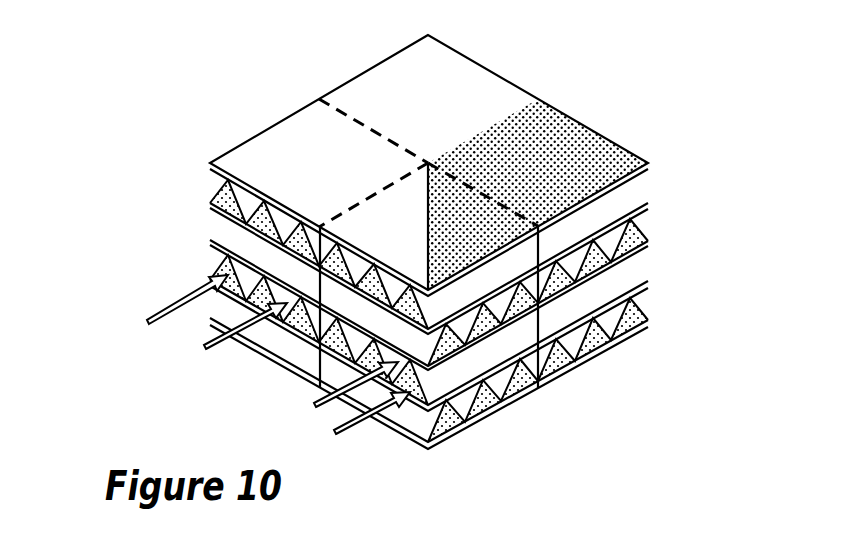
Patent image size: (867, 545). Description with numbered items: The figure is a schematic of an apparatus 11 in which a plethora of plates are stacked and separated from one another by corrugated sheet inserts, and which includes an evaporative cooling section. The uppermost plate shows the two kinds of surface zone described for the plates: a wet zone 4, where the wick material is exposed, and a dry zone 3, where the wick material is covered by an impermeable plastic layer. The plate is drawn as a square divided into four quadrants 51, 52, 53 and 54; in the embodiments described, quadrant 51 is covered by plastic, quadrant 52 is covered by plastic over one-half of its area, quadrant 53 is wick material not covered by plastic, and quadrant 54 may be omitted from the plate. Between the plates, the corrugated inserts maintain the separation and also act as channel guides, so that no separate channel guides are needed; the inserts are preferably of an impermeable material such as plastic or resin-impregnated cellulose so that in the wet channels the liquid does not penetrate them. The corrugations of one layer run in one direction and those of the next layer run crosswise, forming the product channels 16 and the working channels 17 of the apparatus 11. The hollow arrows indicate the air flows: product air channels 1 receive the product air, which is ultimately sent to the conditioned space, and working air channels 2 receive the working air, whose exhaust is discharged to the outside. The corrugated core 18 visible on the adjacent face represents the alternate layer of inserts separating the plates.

The heat exchanger assembly 11 is at (583, 44).
The wet zone 4 is at (272, 150).
The dry zone 3 is at (538, 128).
The quadrant 54 is at (430, 117).
The quadrant 51 is at (351, 177).
The quadrant 53 is at (554, 175).
The quadrant 52 is at (443, 237).
The product channels 16 is at (248, 277).
The second corrugated core layer 18 is at (628, 275).
The working channels 17 is at (418, 393).
The product air channels 1 is at (173, 318).
The working air channels 2 is at (320, 407).